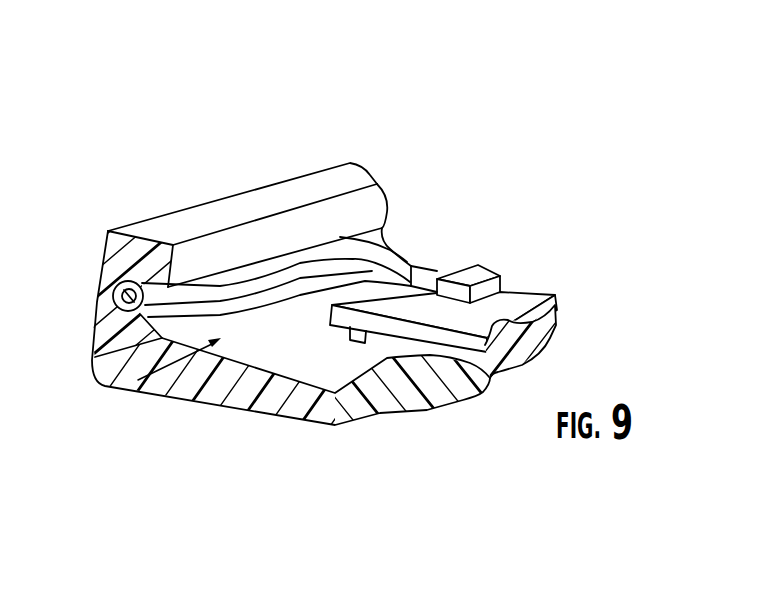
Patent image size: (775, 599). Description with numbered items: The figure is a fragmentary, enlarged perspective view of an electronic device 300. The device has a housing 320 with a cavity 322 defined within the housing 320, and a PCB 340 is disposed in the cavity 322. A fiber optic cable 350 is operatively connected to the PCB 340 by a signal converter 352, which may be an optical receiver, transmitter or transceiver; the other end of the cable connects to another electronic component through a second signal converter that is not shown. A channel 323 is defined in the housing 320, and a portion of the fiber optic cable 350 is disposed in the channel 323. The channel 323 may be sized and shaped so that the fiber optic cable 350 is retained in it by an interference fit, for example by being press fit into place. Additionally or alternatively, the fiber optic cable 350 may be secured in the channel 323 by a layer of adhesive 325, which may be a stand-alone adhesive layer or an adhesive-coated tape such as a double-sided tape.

The electronic device 300 is at (400, 130).
The housing 320 is at (259, 400).
The cavity 322 is at (122, 386).
The channel 323 is at (247, 288).
The layer of adhesive 325 is at (107, 293).
The PCB 340 is at (528, 294).
The fiber optic cable 350 is at (224, 277).
The signal converter 352 is at (465, 273).